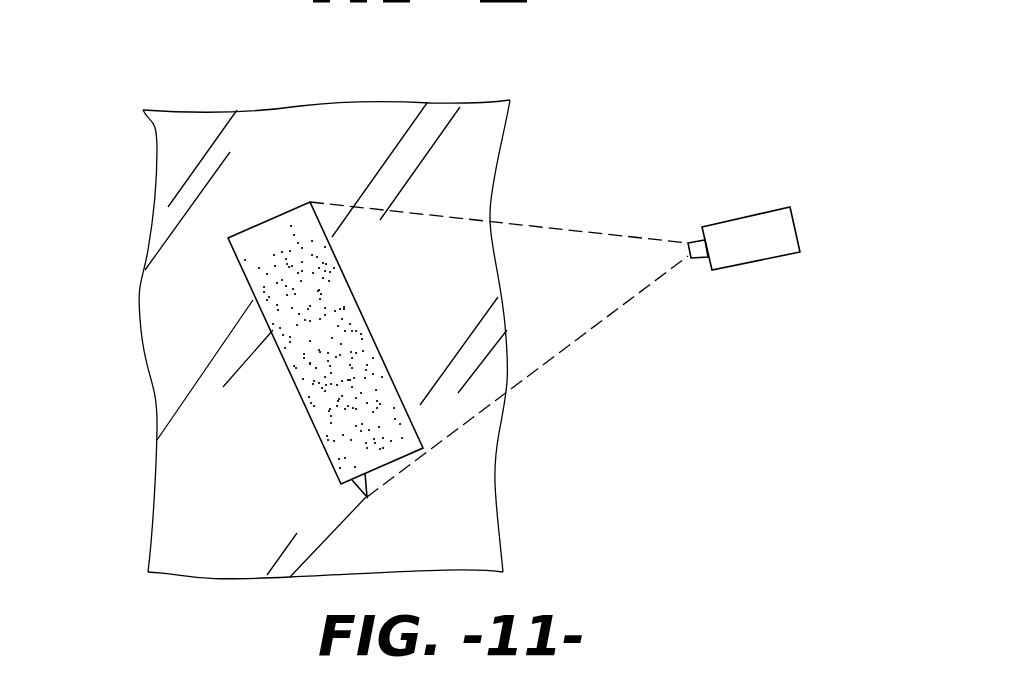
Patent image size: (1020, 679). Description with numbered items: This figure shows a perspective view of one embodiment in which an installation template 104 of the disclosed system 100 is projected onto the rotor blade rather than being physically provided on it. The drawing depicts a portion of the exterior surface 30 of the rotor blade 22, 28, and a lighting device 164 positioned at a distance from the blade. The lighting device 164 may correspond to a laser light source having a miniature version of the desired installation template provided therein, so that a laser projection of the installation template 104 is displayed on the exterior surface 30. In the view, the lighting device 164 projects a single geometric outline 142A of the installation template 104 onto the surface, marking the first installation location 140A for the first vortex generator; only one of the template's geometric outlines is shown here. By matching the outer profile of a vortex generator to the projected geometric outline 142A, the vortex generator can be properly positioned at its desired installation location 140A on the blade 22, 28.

The system 100 is at (142, 67).
The exterior surface 30 is at (267, 126).
The rotor blade 22 is at (326, 315).
The window assembly 28 is at (370, 126).
The installation template 104 is at (172, 336).
The first installation location 140A is at (323, 368).
The geometric outline 142A is at (366, 318).
The lighting device 164 is at (742, 235).